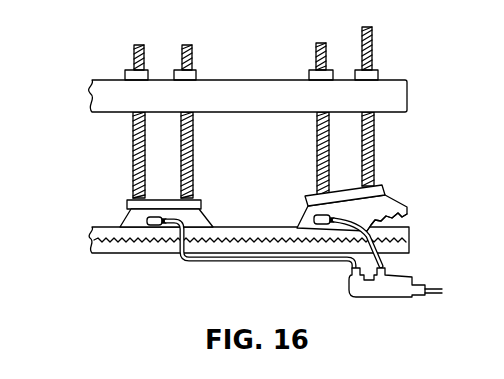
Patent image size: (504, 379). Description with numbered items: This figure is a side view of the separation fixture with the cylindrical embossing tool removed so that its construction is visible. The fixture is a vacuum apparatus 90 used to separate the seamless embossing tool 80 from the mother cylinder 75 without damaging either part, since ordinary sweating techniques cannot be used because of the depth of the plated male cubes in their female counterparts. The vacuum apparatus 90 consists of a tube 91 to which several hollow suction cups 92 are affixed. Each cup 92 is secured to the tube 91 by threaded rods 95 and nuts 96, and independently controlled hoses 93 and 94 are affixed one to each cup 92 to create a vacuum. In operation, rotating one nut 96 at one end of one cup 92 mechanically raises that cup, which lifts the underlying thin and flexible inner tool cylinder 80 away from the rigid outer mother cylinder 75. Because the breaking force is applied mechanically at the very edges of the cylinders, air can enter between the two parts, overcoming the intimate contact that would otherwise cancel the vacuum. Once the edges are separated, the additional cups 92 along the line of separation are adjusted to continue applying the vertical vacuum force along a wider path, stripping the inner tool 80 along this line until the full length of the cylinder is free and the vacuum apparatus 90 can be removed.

The vacuum apparatus 90 is at (63, 65).
The tube 91 is at (107, 97).
The threaded rods 95 is at (185, 45).
The nuts 96 is at (196, 73).
The hollow suction cups 92 is at (317, 203).
The seamless embossing tool 80 is at (405, 213).
The mother cylinder 75 is at (409, 242).
The hose 93 is at (222, 263).
The hose 94 is at (384, 259).